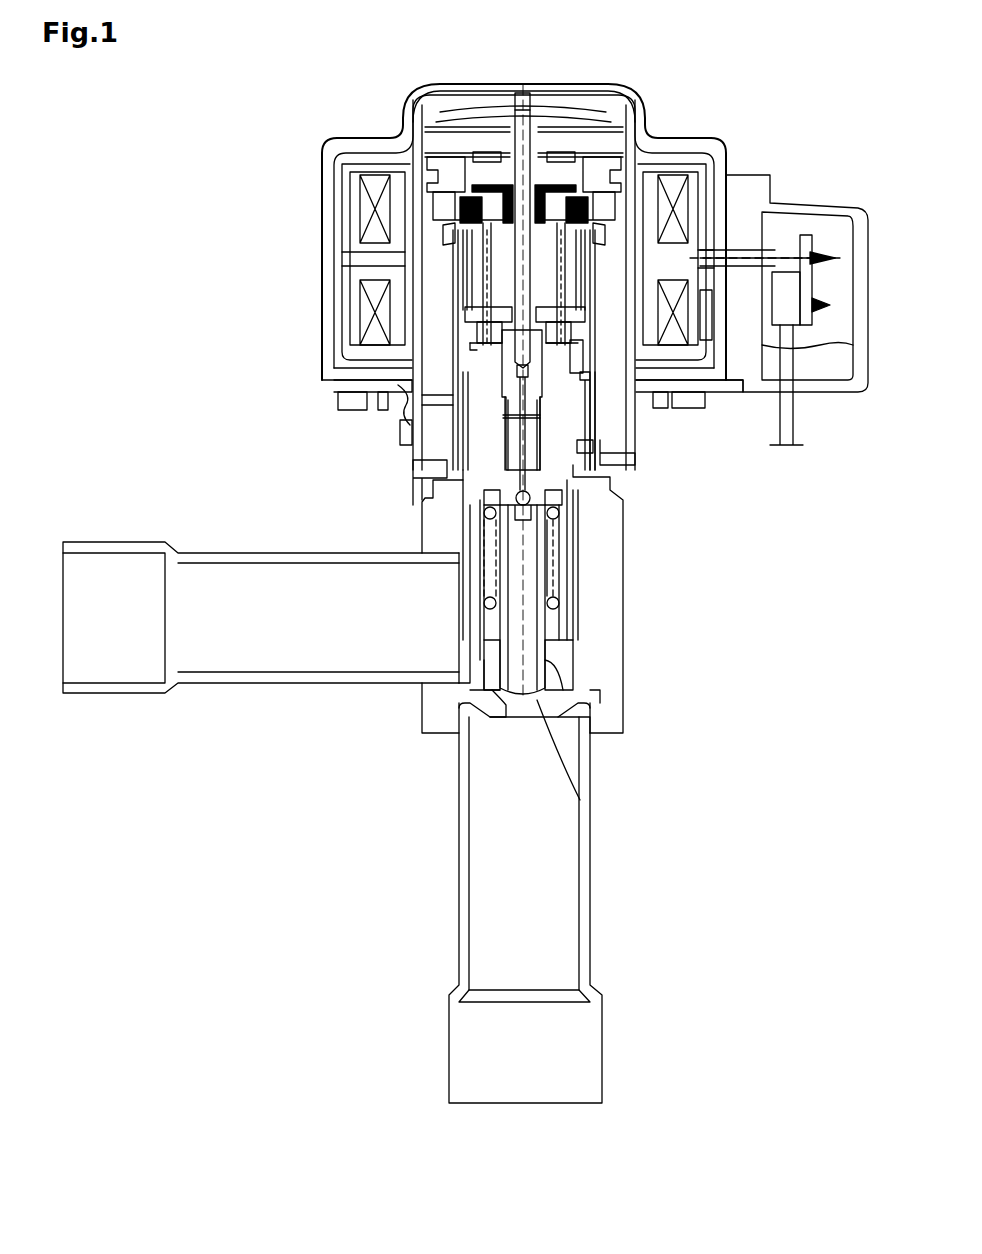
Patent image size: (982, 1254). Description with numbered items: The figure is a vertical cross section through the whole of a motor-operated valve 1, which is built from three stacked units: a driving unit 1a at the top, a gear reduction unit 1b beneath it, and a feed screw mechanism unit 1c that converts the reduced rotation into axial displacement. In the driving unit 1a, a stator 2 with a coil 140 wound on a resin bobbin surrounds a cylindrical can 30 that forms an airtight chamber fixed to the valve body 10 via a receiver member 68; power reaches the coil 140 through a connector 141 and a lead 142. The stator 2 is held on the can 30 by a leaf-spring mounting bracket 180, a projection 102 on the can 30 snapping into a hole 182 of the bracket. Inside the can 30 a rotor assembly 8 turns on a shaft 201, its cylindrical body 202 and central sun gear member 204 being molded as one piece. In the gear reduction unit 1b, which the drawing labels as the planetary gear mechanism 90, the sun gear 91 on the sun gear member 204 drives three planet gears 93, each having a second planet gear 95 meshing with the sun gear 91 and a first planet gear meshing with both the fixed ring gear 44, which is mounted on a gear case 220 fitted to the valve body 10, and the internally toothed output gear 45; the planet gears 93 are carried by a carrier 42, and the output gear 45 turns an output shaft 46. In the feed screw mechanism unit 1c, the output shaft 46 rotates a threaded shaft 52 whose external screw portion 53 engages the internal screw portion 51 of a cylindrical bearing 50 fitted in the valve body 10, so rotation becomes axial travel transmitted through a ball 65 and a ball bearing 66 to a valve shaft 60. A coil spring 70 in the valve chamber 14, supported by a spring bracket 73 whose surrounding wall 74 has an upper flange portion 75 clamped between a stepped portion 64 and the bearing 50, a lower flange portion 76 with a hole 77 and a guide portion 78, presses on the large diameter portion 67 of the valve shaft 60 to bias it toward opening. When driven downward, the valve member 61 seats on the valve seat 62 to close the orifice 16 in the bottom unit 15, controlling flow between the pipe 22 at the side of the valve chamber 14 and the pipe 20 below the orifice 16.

The motor-operated valve 1 is at (800, 85).
The driving unit 1a is at (318, 140).
The gear reduction unit 1b is at (452, 238).
The feed screw mechanism unit 1c is at (445, 378).
The stator 2 is at (712, 152).
The rotor assembly 8 is at (432, 160).
The valve body 10 is at (620, 710).
The valve chamber 14 is at (565, 647).
The bottom unit 15 is at (580, 692).
The orifice 16 is at (580, 800).
The pipe 20 is at (459, 930).
The pipe 22 is at (210, 683).
The can 30 is at (545, 110).
The carrier 42 is at (462, 288).
The ring gear 44 is at (452, 215).
The internally toothed output gear 45 is at (450, 276).
The output shaft 46 is at (497, 357).
The cylindrical bearing 50 is at (620, 330).
The internal screw portion 51 is at (620, 453).
The threaded shaft 52 is at (565, 382).
The external screw portion 53 is at (440, 455).
The valve shaft 60 is at (533, 636).
The valve member 61 is at (582, 668).
The valve seat 62 is at (545, 680).
The stepped portion 64 is at (577, 492).
The ball 65 is at (582, 512).
The ball bearing 66 is at (492, 510).
The large diameter portion 67 is at (505, 472).
The receiver member 68 is at (637, 463).
The coil spring 70 is at (556, 555).
The spring bracket 73 is at (480, 608).
The cylindrical surrounding wall 74 is at (590, 558).
The upper flange portion 75 is at (577, 478).
The lower flange portion 76 is at (492, 604).
The hole 77 is at (497, 678).
The guide portion 78 is at (495, 648).
The stator 90 is at (468, 160).
The sun gear 91 is at (506, 180).
The planet gear 93 is at (480, 185).
The second planet gear 95 is at (455, 250).
The projection 102 is at (402, 412).
The coil 140 is at (365, 308).
The connector 141 is at (792, 312).
The lead 142 is at (778, 258).
The mounting bracket 180 is at (405, 440).
The hole 182 is at (395, 398).
The shaft 201 is at (527, 125).
The cylindrical body 202 is at (638, 128).
The sun gear member 204 is at (615, 140).
The gear case 220 is at (700, 392).